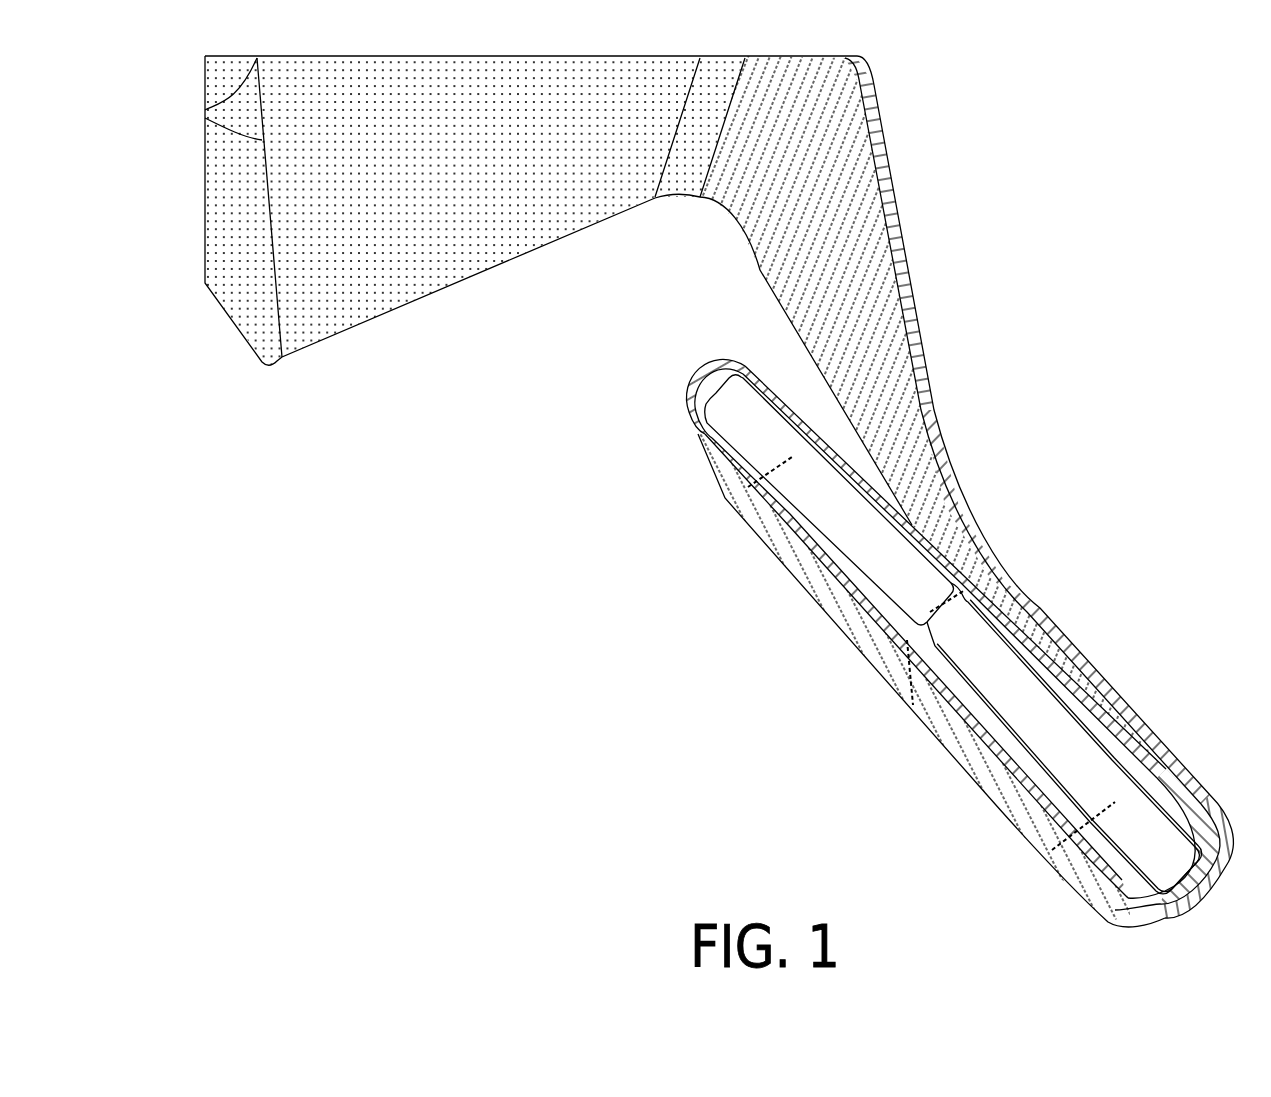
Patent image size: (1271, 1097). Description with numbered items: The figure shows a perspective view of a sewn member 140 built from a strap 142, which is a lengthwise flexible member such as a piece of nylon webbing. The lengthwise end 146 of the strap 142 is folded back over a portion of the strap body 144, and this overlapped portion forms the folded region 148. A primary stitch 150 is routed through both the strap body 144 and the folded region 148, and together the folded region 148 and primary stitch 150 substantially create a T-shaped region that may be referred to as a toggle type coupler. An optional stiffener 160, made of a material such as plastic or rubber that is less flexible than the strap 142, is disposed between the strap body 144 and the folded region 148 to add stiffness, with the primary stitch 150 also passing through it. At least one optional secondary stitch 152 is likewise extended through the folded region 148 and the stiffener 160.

The sewn member 140 is at (482, 621).
The strap 142 is at (1003, 300).
The strap body 144 is at (872, 256).
The lengthwise end 146 is at (720, 406).
The folded region 148 is at (1092, 963).
The primary stitch 150 is at (988, 572).
The secondary stitch 152 is at (725, 490).
The stiffener 160 is at (1032, 717).